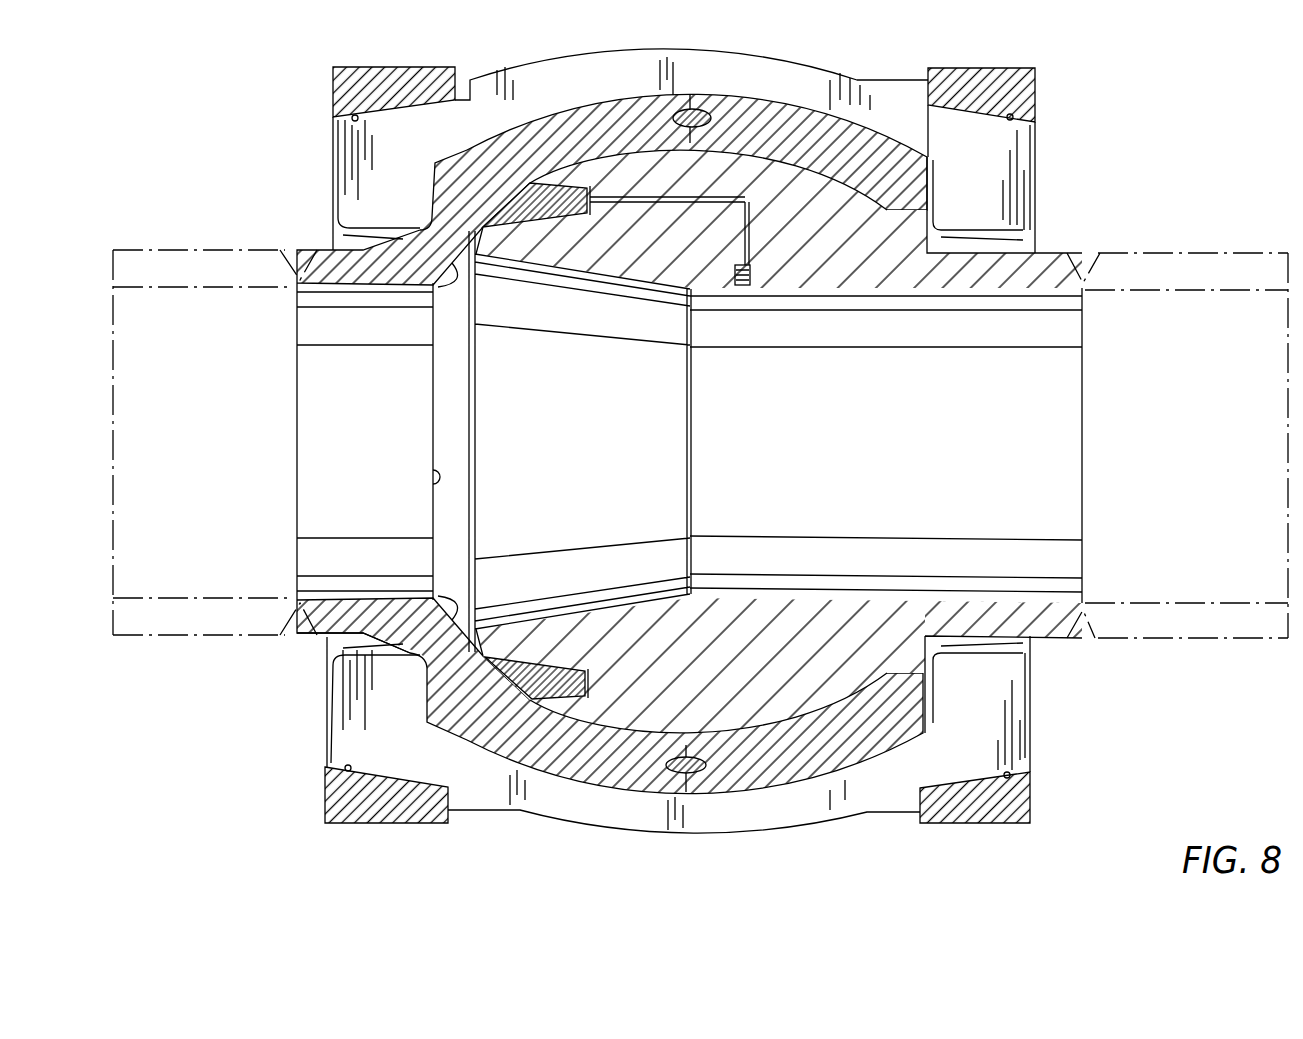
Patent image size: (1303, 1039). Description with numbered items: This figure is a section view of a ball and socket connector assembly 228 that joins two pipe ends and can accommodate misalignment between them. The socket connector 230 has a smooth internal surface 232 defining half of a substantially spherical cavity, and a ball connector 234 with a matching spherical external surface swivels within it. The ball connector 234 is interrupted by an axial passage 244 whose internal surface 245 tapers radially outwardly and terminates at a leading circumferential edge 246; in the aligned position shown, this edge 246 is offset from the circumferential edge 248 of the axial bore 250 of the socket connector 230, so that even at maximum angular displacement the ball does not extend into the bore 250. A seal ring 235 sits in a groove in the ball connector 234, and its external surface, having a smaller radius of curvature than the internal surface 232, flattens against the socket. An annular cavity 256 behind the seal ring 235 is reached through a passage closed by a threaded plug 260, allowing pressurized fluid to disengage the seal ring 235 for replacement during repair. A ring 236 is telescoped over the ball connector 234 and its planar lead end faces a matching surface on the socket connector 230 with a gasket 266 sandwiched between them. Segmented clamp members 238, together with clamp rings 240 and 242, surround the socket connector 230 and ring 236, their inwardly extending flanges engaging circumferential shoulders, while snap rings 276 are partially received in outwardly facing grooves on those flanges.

The ball and socket connector assembly 228 is at (783, 33).
The socket connector 230 is at (573, 128).
The internal surface 232 is at (453, 278).
The ball connector 234 is at (840, 217).
The seal ring 235 is at (533, 200).
The ring 236 is at (807, 133).
The segmented clamp members 238 is at (637, 70).
The clamp ring 240 is at (380, 65).
The clamp ring 242 is at (1013, 68).
The axial passage 244 is at (1060, 427).
The internal surface 245 is at (580, 620).
The circumferential edge 246 is at (370, 636).
The circumferential edge 248 is at (437, 485).
The axial bore 250 is at (308, 410).
The annular cavity 256 is at (590, 215).
The threaded plug 260 is at (747, 288).
The gasket 266 is at (705, 100).
The snap rings 276 is at (1040, 108).